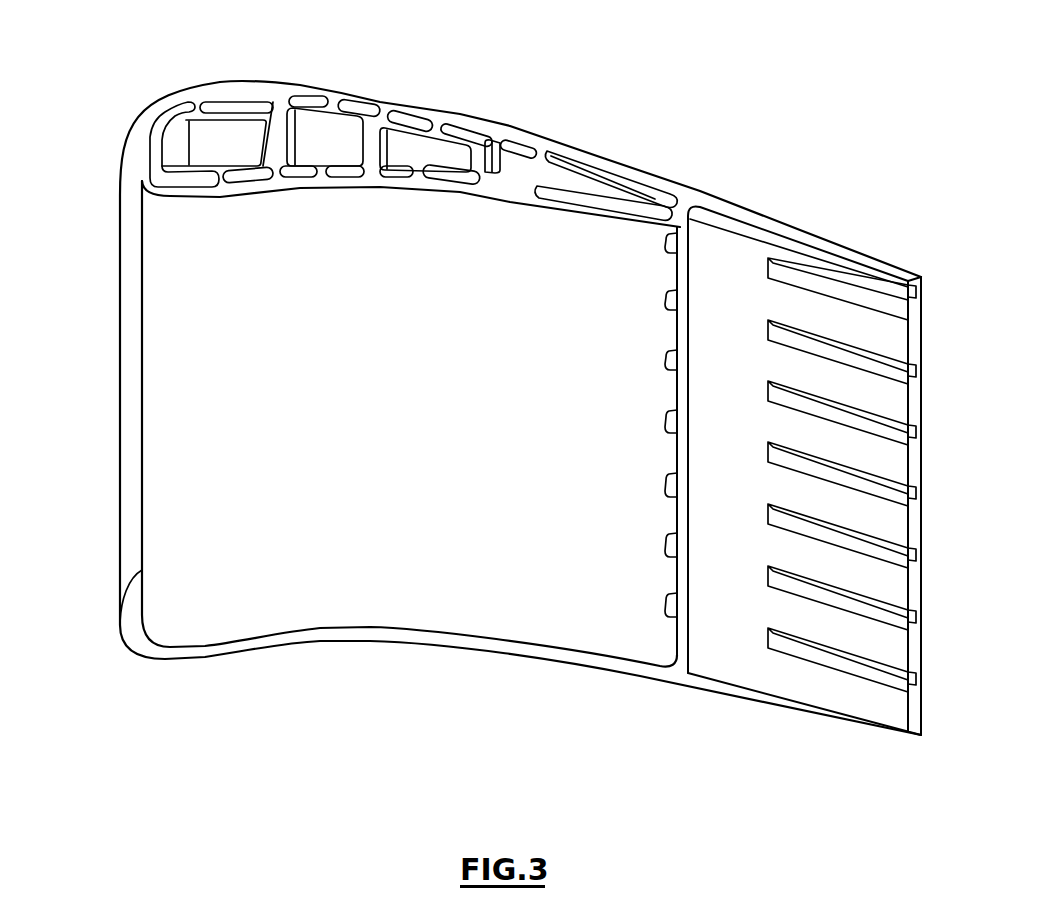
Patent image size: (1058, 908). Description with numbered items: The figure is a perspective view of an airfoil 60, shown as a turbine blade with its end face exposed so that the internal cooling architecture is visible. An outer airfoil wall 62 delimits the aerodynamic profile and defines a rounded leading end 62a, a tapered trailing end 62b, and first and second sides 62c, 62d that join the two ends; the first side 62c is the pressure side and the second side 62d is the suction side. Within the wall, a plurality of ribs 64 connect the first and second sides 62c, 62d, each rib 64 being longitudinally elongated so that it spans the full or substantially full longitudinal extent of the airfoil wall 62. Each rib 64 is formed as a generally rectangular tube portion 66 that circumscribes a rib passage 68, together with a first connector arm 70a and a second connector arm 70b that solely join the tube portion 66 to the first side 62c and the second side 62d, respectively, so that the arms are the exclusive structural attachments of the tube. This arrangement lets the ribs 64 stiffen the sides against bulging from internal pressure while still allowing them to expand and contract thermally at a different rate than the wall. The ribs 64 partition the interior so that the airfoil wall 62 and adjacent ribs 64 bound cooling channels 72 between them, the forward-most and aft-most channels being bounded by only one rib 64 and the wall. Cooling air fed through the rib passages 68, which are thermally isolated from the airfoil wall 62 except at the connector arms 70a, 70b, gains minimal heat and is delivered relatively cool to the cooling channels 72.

The airfoil 60 is at (251, 674).
The airfoil wall 62 is at (178, 200).
The leading end 62a is at (110, 191).
The trailing end 62b is at (935, 270).
The first side 62c is at (474, 206).
The second side 62d is at (510, 115).
The rib 64 is at (150, 155).
The tube portion 66 is at (380, 110).
The rib passage 68 is at (327, 137).
The first connector arm 70a is at (340, 177).
The second connector arm 70b is at (333, 107).
The cooling channel 72 is at (291, 94).